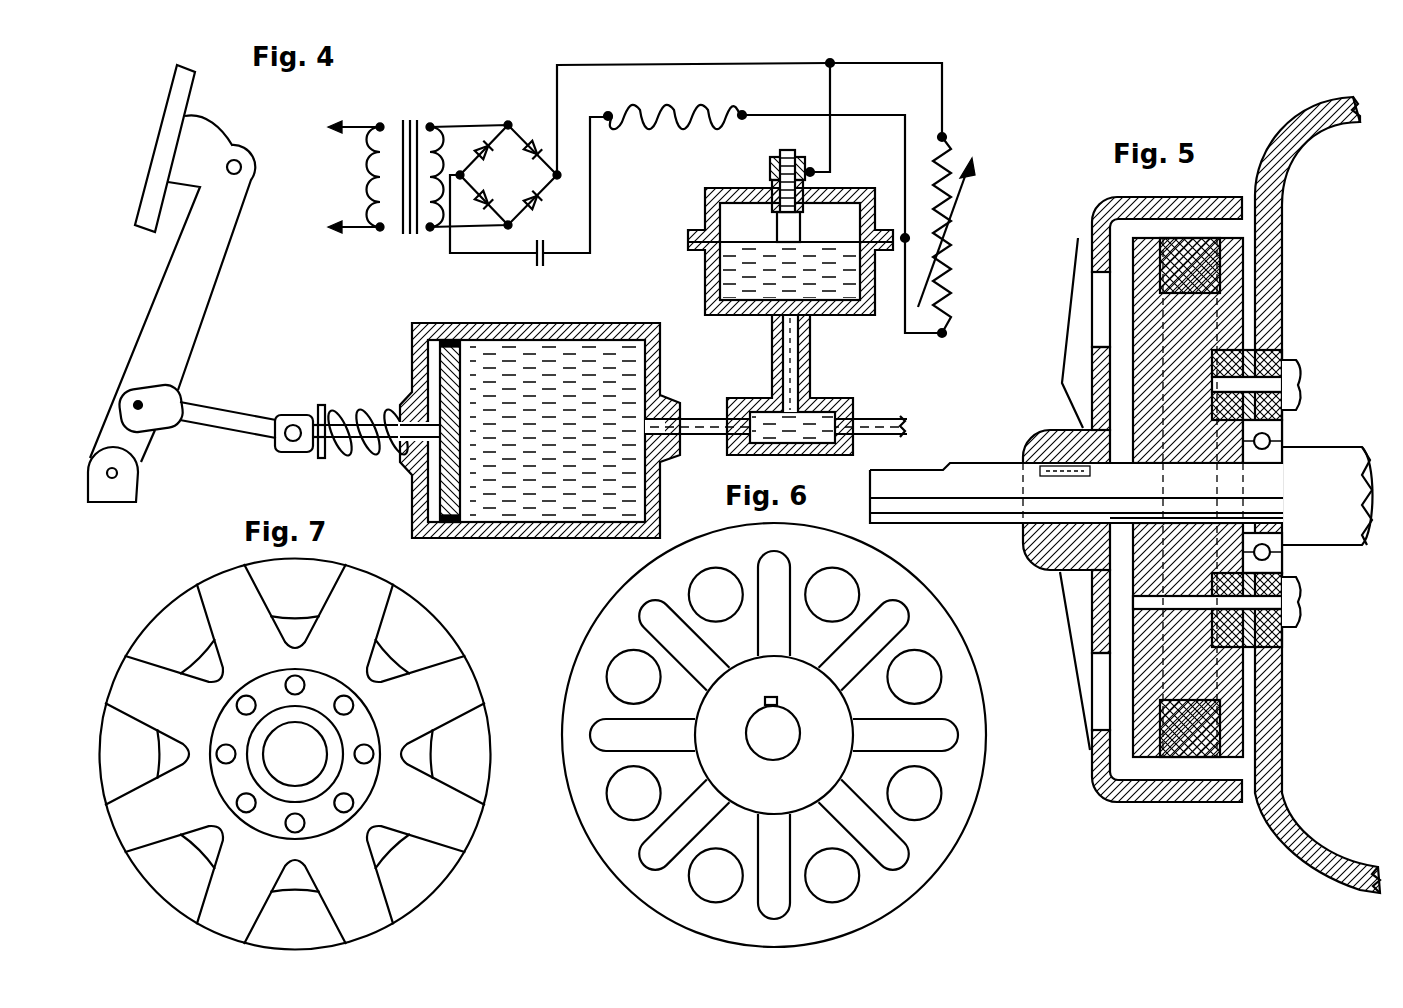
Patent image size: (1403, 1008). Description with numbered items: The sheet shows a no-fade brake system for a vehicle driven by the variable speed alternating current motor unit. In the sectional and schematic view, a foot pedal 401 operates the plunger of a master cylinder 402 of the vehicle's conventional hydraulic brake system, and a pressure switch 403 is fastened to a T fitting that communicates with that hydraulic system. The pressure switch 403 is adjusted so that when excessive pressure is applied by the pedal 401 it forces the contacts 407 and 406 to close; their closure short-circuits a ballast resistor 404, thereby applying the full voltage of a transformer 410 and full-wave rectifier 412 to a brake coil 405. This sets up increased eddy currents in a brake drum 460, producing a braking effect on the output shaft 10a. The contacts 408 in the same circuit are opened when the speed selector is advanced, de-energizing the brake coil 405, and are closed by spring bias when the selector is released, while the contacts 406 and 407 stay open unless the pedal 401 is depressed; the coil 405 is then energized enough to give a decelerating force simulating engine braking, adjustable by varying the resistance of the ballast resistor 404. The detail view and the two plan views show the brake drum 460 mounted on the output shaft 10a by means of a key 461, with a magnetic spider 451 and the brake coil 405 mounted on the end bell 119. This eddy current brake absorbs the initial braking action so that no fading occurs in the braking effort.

In FIG. 4, the foot pedal 401 is at (217, 288).
In FIG. 4, the master cylinder 402 is at (442, 373).
In FIG. 4, the pressure switch 403 is at (705, 280).
In FIG. 4, the ballast resistor 404 is at (950, 256).
In FIG. 4, the brake coil 405 is at (672, 115).
In FIG. 5, the brake coil 405 is at (1185, 275).
In FIG. 7, the brake coil 405 is at (459, 738).
In FIG. 4, the contact 406 is at (798, 208).
In FIG. 4, the contact 407 is at (777, 230).
In FIG. 4, the contacts 408 is at (535, 258).
In FIG. 4, the transformer 410 is at (403, 125).
In FIG. 4, the full-wave rectifier 412 is at (493, 140).
In FIG. 5, the magnetic spider 451 is at (1230, 310).
In FIG. 7, the magnetic spider 451 is at (374, 913).
In FIG. 5, the brake drum 460 is at (1092, 620).
In FIG. 6, the brake drum 460 is at (972, 745).
In FIG. 5, the key 461 is at (1045, 437).
In FIG. 5, the output shaft 10a is at (990, 522).
In FIG. 6, the output shaft 10a is at (770, 740).
In FIG. 7, the output shaft 10a is at (302, 768).
In FIG. 5, the end bell 119 is at (1270, 835).